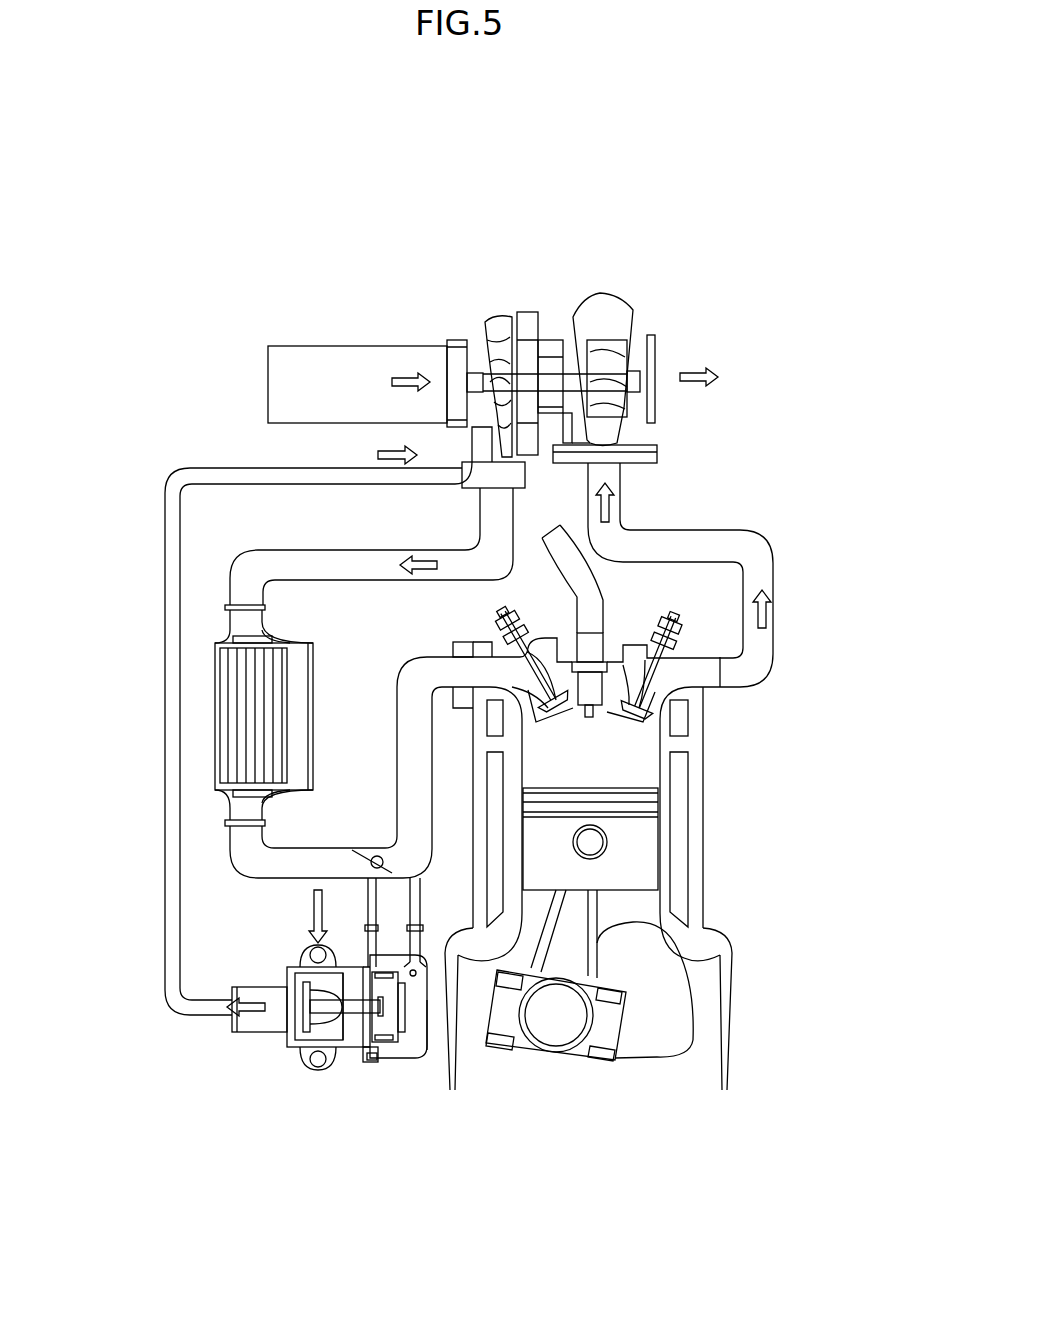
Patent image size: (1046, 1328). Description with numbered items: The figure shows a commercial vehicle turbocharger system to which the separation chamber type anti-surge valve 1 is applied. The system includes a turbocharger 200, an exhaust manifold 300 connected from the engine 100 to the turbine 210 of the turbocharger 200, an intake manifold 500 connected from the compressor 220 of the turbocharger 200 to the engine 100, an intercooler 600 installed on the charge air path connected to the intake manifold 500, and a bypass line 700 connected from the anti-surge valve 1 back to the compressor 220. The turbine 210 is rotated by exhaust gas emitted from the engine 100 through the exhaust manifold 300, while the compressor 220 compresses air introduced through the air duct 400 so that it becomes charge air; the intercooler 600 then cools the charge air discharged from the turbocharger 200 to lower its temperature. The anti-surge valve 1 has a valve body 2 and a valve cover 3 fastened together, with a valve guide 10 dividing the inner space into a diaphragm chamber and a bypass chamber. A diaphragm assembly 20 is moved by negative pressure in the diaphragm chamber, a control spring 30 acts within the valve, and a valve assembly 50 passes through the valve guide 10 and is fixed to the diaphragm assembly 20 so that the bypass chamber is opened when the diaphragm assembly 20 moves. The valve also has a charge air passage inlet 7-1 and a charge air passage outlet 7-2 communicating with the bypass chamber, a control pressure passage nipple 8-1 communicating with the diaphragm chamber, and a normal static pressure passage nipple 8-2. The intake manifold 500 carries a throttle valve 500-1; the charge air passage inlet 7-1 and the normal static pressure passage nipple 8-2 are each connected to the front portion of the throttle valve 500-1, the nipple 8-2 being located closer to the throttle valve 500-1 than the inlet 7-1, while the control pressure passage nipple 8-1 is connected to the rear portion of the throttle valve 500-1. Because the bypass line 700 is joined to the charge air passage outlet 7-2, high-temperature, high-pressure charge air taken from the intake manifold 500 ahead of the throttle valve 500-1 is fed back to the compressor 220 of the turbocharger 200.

The anti-surge valve 1 is at (321, 1088).
The valve body 2 is at (287, 1047).
The valve cover 3 is at (418, 1052).
The valve guide 10 is at (357, 1033).
The diaphragm assembly 20 is at (373, 1045).
The control spring 30 is at (395, 1042).
The valve assembly 50 is at (319, 1010).
The charge air passage inlet 7-1 is at (330, 993).
The charge air passage outlet 7-2 is at (248, 1020).
The control pressure passage nipple 8-1 is at (417, 933).
The normal static pressure passage nipple 8-2 is at (373, 935).
The engine 100 is at (660, 840).
The turbocharger 200 is at (582, 294).
The turbine 210 is at (618, 312).
The compressor 220 is at (502, 323).
The exhaust manifold 300 is at (758, 570).
The air duct 400 is at (340, 358).
The intake manifold 500 is at (397, 770).
The throttle valve 500-1 is at (372, 848).
The intercooler 600 is at (247, 713).
The bypass line 700 is at (172, 758).